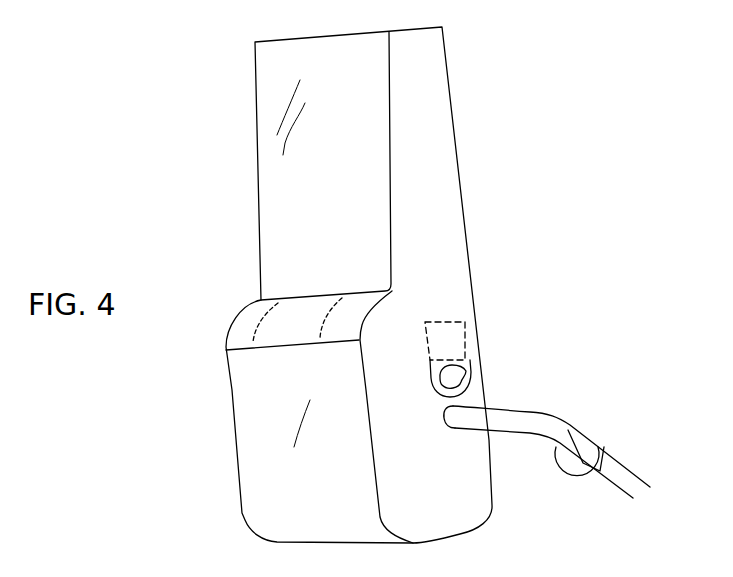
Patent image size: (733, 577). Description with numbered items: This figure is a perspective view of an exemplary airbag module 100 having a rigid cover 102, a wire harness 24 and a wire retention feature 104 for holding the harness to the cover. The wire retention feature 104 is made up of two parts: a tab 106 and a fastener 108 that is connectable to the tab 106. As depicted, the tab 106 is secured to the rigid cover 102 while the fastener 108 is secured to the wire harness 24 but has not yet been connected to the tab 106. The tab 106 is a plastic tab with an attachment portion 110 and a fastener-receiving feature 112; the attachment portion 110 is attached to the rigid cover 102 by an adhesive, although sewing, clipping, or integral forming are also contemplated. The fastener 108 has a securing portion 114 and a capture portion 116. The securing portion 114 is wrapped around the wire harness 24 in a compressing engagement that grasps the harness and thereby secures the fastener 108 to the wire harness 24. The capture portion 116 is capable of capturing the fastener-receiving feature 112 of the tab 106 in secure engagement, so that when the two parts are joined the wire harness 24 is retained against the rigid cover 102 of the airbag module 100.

The airbag module 100 is at (289, 285).
The rigid cover 102 is at (258, 485).
The wire retention feature 104 is at (511, 344).
The tab 106 is at (467, 362).
The fastener 108 is at (565, 477).
The attachment portion 110 is at (465, 323).
The fastener-receiving feature 112 is at (497, 398).
The securing portion 114 is at (597, 443).
The capture portion 116 is at (577, 463).
The wire harness 24 is at (548, 422).